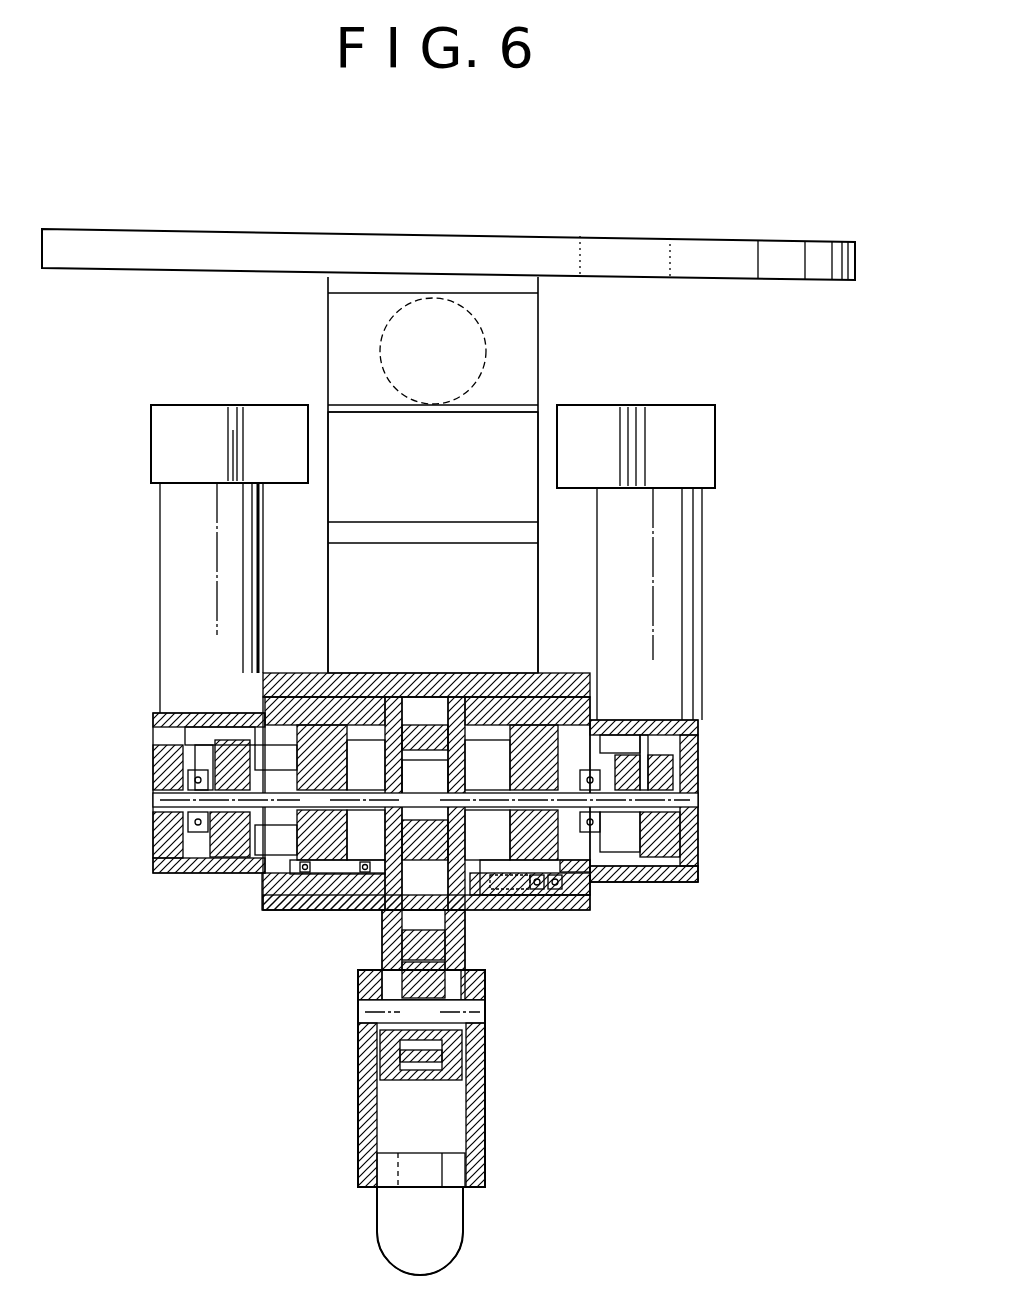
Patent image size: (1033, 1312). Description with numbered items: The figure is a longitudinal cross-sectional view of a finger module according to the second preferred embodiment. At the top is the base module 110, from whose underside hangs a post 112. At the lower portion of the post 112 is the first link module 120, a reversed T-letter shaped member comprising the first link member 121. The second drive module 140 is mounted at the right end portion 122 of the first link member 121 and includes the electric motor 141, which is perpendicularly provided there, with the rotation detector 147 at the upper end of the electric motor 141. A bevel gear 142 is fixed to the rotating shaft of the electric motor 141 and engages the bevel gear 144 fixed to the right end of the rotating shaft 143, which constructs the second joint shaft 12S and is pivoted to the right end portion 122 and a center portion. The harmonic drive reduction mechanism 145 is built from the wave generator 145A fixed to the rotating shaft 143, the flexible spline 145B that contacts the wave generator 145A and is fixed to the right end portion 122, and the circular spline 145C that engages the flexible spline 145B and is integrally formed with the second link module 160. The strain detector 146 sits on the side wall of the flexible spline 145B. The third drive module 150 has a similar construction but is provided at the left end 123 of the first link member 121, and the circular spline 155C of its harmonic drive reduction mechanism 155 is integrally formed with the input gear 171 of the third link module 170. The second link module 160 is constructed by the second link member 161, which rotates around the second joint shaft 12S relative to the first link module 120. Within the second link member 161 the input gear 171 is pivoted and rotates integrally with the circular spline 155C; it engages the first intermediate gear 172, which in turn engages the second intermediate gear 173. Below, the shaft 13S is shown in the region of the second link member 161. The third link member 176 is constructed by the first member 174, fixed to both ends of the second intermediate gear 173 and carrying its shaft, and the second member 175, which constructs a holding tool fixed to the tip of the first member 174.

The base module 110 is at (683, 252).
The post 112 is at (530, 323).
The first link member 121 is at (527, 440).
The first link module 120 is at (322, 540).
The rotation detector 147 is at (703, 457).
The electric motor 141 is at (693, 579).
The second drive module 140 is at (714, 655).
The third drive module 150 is at (148, 753).
The harmonic drive reduction mechanism 155 is at (240, 888).
The input gear 171 is at (414, 735).
The second joint shaft 12S is at (692, 805).
The bevel gear 142 is at (672, 757).
The bevel gear 144 is at (700, 832).
The rotating shaft 143 is at (696, 875).
The right end portion 122 is at (646, 885).
The strain detector 146 is at (592, 886).
The flexible spline 145B is at (580, 888).
The wave generator 145A is at (566, 890).
The circular spline 145C is at (546, 892).
The harmonic drive reduction mechanism 145 is at (678, 990).
The left end 123 is at (265, 912).
The circular spline 155C is at (316, 910).
The first intermediate gear 172 is at (385, 925).
The second link member 161 is at (466, 950).
The second link module 160 is at (495, 985).
The lower shaft 13S is at (358, 1006).
The second intermediate gear 173 is at (356, 1050).
The first member 174 is at (357, 1118).
The third link module 170 is at (505, 1152).
The second member 175 is at (450, 1231).
The third link member 176 is at (358, 1232).